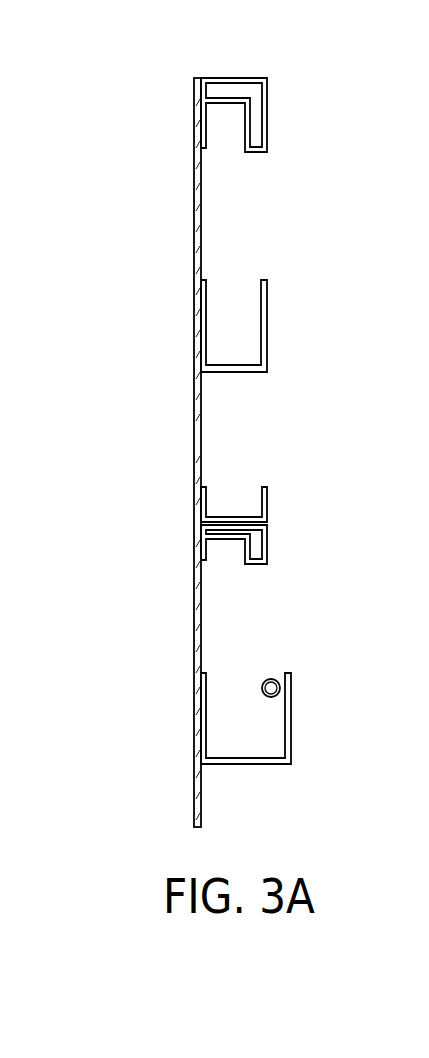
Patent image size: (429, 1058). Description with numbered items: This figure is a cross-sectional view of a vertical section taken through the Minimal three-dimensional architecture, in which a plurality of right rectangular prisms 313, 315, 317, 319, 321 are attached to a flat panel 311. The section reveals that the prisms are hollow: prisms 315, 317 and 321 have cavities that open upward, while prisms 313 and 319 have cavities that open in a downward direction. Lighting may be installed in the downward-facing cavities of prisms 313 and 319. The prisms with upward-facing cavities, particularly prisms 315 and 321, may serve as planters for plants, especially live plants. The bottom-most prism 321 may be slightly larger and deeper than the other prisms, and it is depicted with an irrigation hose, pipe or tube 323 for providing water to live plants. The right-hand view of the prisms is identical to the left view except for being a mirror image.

The flat panel 311 is at (201, 441).
The right rectangular prism 313 is at (235, 78).
The right rectangular prism 315 is at (267, 323).
The right rectangular prism 317 is at (267, 503).
The right rectangular prism 319 is at (267, 538).
The bottom-most prism 321 is at (291, 717).
The irrigation hose, pipe or tube 323 is at (272, 679).